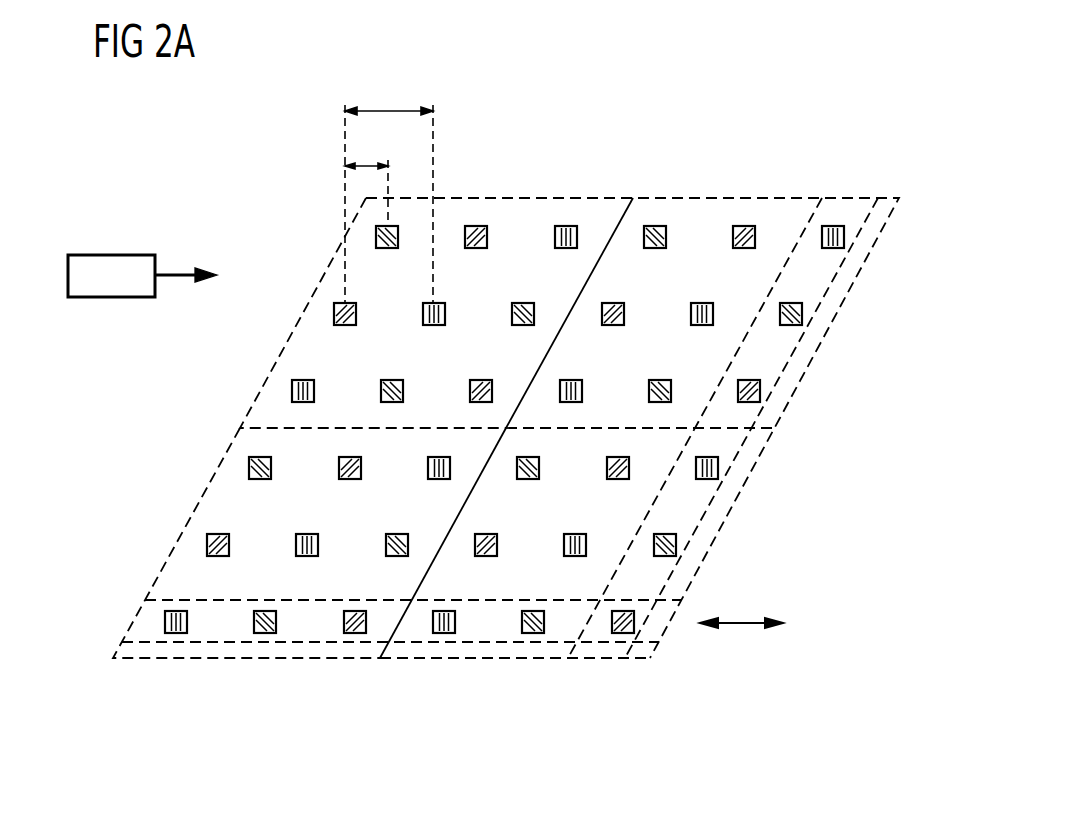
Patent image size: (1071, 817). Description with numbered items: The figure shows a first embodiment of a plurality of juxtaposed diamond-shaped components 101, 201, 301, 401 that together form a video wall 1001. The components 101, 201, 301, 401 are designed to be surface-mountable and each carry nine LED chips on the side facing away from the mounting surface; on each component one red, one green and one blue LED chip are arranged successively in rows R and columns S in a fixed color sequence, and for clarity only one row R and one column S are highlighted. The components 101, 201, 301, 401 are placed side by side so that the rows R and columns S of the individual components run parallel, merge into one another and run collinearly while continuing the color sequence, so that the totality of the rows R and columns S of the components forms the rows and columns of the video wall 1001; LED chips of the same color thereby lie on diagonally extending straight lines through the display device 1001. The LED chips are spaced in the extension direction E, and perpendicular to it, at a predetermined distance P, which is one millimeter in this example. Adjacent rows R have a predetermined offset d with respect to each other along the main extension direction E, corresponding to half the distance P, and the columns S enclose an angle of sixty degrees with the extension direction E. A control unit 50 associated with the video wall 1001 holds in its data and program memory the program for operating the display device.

The control unit 50 is at (110, 254).
The diamond-shaped component 101 is at (505, 198).
The diamond-shaped component 201 is at (760, 197).
The diamond-shaped component 301 is at (243, 660).
The diamond-shaped component 401 is at (503, 660).
The video wall 1001 is at (561, 351).
The column S is at (860, 197).
The row R is at (662, 631).
The extension direction E is at (741, 622).
The predetermined distance P is at (388, 110).
The predetermined offset d is at (365, 165).